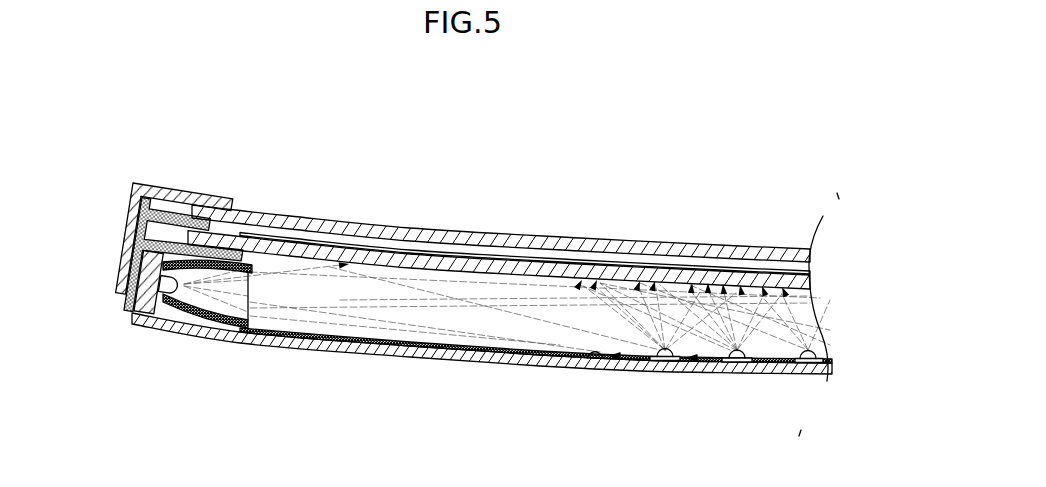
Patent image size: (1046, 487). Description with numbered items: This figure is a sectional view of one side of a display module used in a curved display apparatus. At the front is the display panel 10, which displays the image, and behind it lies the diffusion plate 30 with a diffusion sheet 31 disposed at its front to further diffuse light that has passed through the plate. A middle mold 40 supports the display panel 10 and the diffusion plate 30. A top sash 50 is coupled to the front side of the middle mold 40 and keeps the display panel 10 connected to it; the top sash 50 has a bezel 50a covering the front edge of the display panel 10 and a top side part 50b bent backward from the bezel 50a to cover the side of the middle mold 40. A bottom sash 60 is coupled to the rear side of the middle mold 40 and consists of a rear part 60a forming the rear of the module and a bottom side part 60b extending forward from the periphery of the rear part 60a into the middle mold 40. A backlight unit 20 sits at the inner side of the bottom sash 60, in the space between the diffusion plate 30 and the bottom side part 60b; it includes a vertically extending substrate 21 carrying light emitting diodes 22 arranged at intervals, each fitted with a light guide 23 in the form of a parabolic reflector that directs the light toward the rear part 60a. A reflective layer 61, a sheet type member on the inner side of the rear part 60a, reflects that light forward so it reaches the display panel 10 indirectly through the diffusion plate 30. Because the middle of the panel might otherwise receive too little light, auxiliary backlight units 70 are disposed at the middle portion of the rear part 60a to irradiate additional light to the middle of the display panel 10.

The display panel 10 is at (533, 229).
The backlight unit 20 is at (212, 336).
The substrate 21 is at (142, 313).
The light emitting diode 22 is at (172, 293).
The light guide 23 is at (210, 327).
The diffusion plate 30 is at (629, 268).
The diffusion sheet 31 is at (331, 242).
The middle mold 40 is at (131, 240).
The top sash 50 is at (157, 174).
The bezel 50a is at (177, 193).
The top side part 50b is at (128, 212).
The bottom sash 60 is at (482, 377).
The rear part 60a is at (424, 363).
The bottom side part 60b is at (123, 263).
The reflective layer 61 is at (600, 354).
The auxiliary backlight unit 70 is at (736, 348).